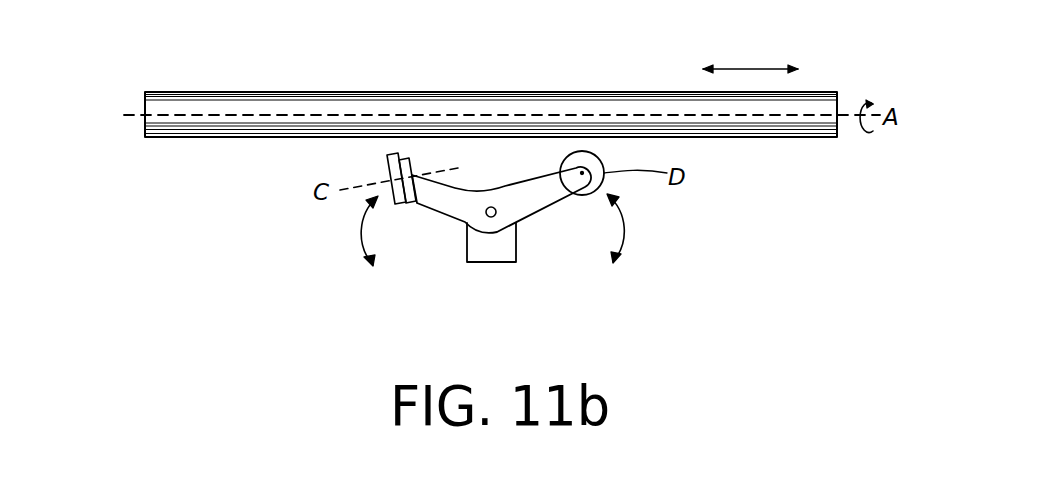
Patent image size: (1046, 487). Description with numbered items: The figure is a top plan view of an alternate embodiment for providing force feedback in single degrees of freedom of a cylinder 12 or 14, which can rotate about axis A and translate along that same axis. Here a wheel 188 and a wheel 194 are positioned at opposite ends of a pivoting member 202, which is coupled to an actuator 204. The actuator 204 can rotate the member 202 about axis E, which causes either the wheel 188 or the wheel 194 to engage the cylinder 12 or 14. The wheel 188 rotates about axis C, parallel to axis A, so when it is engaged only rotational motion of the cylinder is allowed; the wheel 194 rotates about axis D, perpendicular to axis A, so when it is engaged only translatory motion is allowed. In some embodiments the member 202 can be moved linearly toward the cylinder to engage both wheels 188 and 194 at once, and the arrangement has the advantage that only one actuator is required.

The cylinder 12 is at (274, 100).
The cylinder 14 is at (502, 79).
The wheel 188 is at (388, 160).
The pivoting member 202 is at (540, 193).
The wheel 194 is at (583, 191).
The actuator 204 is at (487, 255).